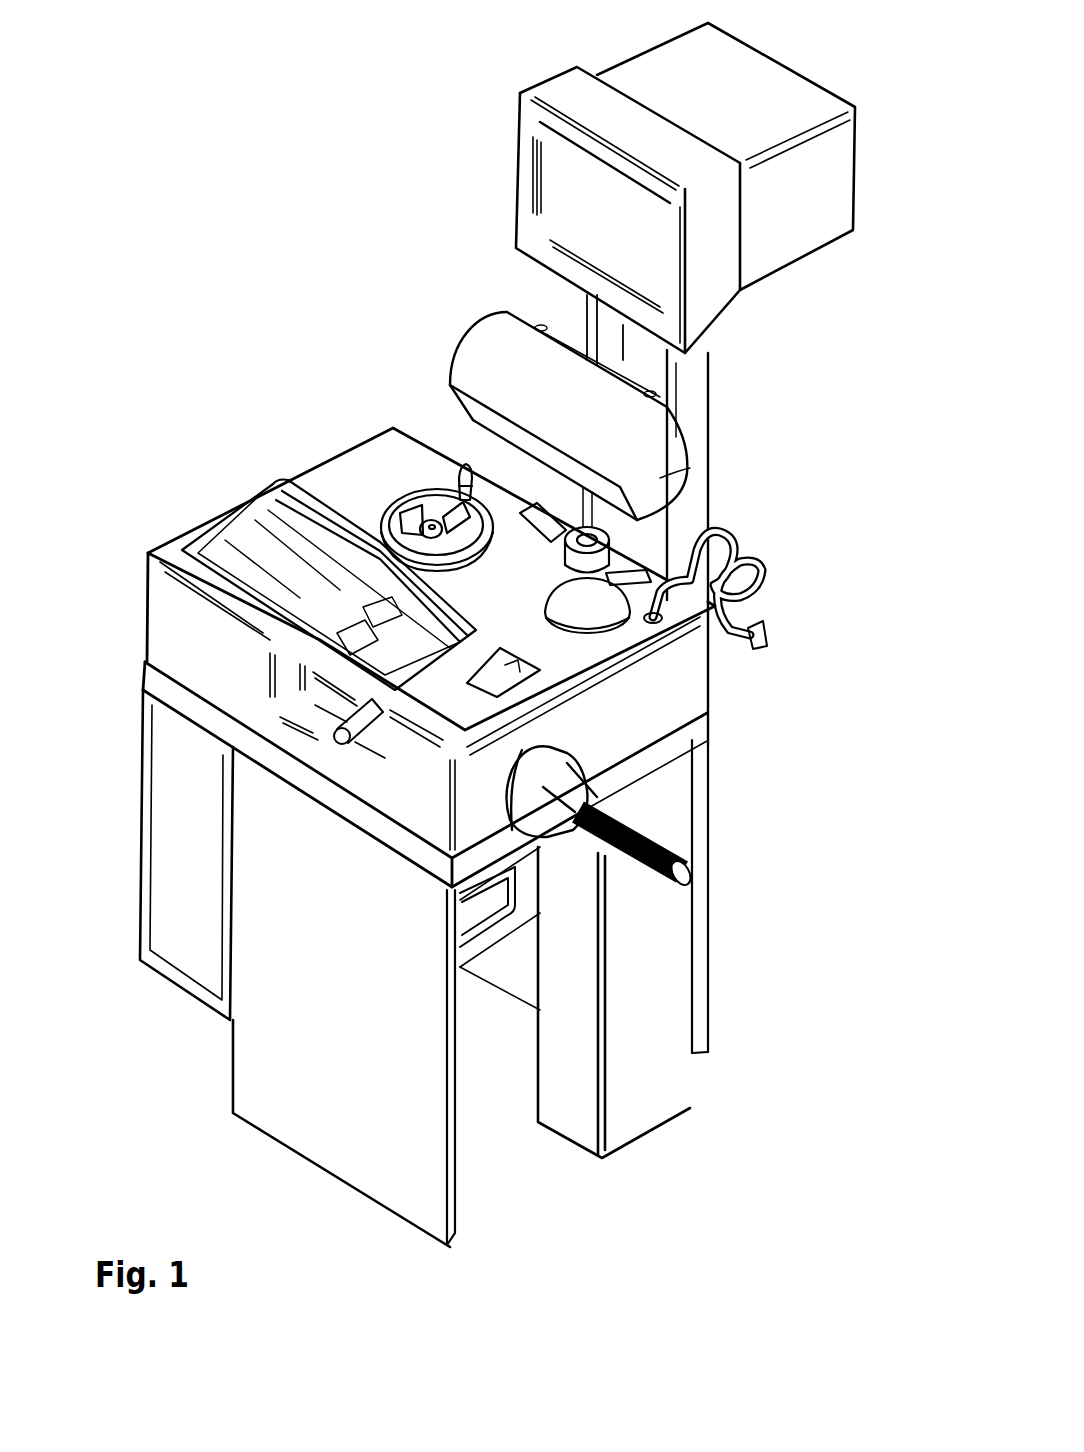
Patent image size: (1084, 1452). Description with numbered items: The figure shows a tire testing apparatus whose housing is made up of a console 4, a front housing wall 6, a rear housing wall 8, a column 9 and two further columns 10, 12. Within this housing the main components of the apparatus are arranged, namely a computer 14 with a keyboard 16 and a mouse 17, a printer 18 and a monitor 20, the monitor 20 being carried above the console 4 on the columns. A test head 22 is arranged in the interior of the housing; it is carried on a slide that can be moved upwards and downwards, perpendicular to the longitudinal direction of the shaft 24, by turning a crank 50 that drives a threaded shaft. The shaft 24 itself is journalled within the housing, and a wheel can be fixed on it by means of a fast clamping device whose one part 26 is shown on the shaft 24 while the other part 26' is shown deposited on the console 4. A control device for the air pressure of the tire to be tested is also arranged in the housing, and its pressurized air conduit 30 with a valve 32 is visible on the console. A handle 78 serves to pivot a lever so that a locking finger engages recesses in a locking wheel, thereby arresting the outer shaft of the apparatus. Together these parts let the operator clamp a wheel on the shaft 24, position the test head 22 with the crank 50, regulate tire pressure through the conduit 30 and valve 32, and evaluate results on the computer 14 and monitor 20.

The console 4 is at (172, 628).
The front housing wall 6 is at (270, 1050).
The rear housing wall 8 is at (520, 985).
The column 9 is at (640, 1097).
The column 10 is at (700, 388).
The column 12 is at (607, 328).
The computer 14 is at (175, 828).
The keyboard 16 is at (217, 530).
The mouse 17 is at (510, 672).
The printer 18 is at (660, 475).
The monitor 20 is at (793, 233).
The test head 22 is at (477, 900).
The shaft 24 is at (657, 843).
The fast clamping device part 26 is at (656, 787).
The fast clamping device part 26' is at (683, 561).
The pressurized air conduit 30 is at (767, 569).
The valve 32 is at (768, 634).
The crank 50 is at (464, 464).
The handle 78 is at (377, 743).